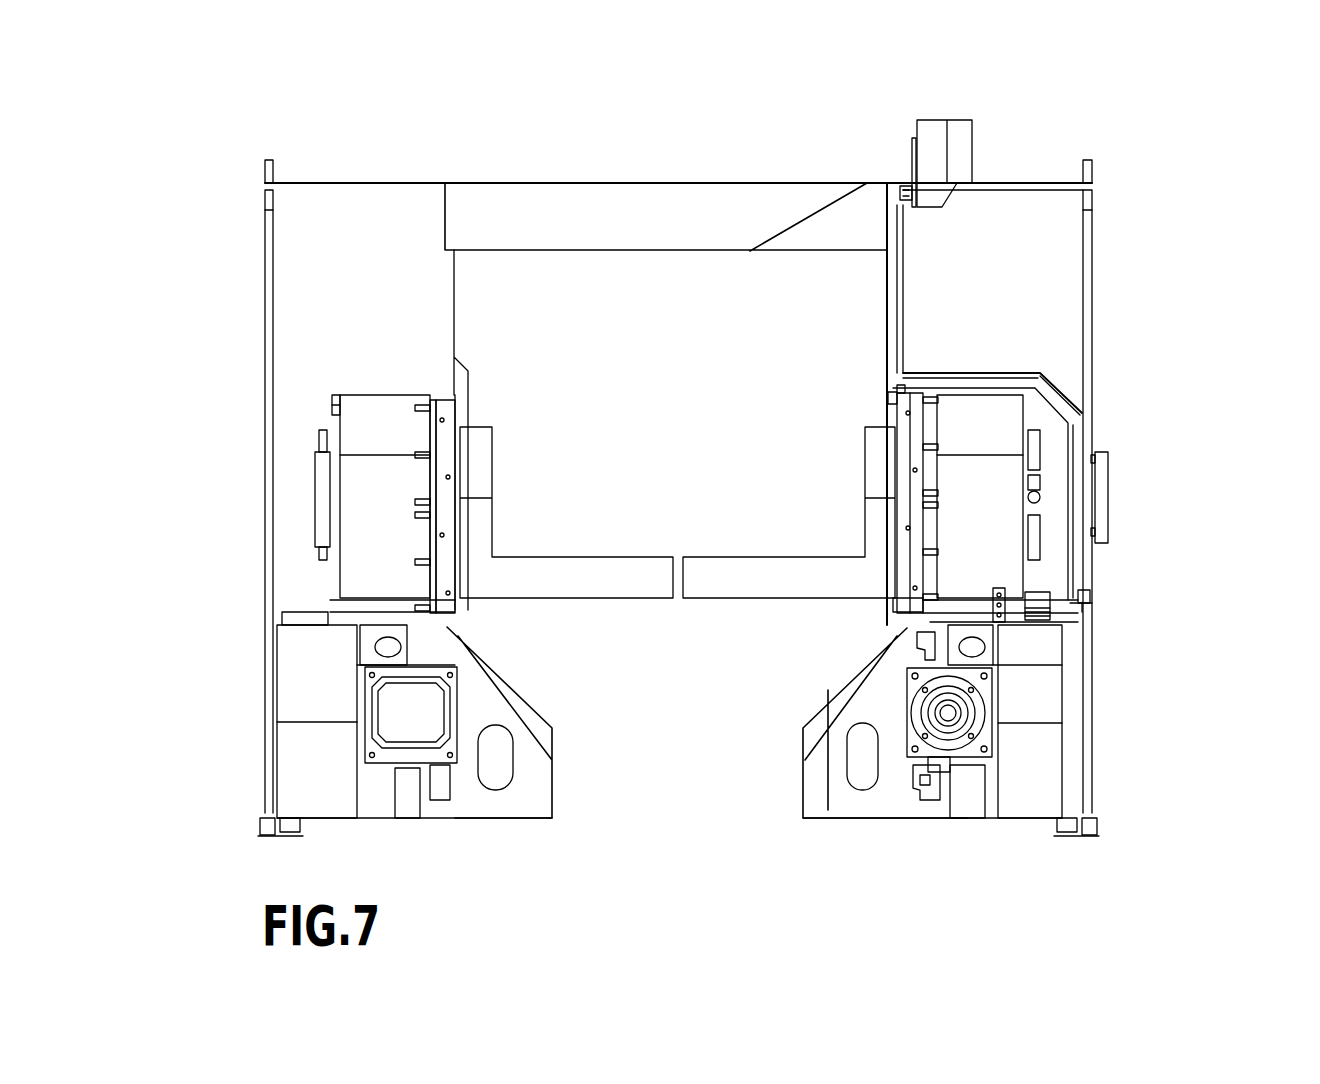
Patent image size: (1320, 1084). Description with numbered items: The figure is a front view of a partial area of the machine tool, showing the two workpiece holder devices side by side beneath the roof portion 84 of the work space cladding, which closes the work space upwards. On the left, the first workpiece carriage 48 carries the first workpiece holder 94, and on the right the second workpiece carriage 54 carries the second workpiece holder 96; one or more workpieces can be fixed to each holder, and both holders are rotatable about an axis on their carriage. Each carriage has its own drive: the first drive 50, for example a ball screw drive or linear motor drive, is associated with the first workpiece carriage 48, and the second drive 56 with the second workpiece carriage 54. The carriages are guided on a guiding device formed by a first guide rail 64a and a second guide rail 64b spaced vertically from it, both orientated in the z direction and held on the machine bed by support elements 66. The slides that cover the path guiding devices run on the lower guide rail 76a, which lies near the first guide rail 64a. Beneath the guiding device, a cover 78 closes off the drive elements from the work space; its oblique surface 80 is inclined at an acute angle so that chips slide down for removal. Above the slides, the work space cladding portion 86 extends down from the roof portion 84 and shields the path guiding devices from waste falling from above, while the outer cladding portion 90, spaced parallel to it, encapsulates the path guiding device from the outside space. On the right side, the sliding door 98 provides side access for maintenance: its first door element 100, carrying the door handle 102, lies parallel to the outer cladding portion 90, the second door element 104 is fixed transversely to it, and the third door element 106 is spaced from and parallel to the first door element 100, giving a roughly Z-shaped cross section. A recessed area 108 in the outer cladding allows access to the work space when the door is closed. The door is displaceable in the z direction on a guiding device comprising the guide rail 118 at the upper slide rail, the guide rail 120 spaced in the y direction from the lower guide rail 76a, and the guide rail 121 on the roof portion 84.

The first workpiece carriage 48 is at (380, 563).
The first drive 50 is at (405, 710).
The second workpiece carriage 54 is at (962, 560).
The second drive 56 is at (945, 717).
The first guide rail 64a is at (933, 653).
The second guide rail 64b is at (935, 792).
The support element 66 is at (850, 800).
The lower guide rail 76a is at (890, 602).
The cover 78 is at (815, 717).
The oblique surface 80 is at (540, 717).
The roof portion 84 is at (654, 183).
The work space cladding portion 86 is at (1093, 232).
The outer cladding portion 90 is at (887, 300).
The first workpiece holder 94 is at (482, 467).
The second workpiece holder 96 is at (877, 450).
The sliding door 98 is at (1068, 380).
The first door element 100 is at (1072, 442).
The door handle 102 is at (1110, 492).
The second door element 104 is at (962, 380).
The third door element 106 is at (897, 330).
The recessed area 108 is at (985, 237).
The guide rail 118 is at (890, 392).
The guide rail 120 is at (1090, 597).
The guide rail 121 is at (905, 190).